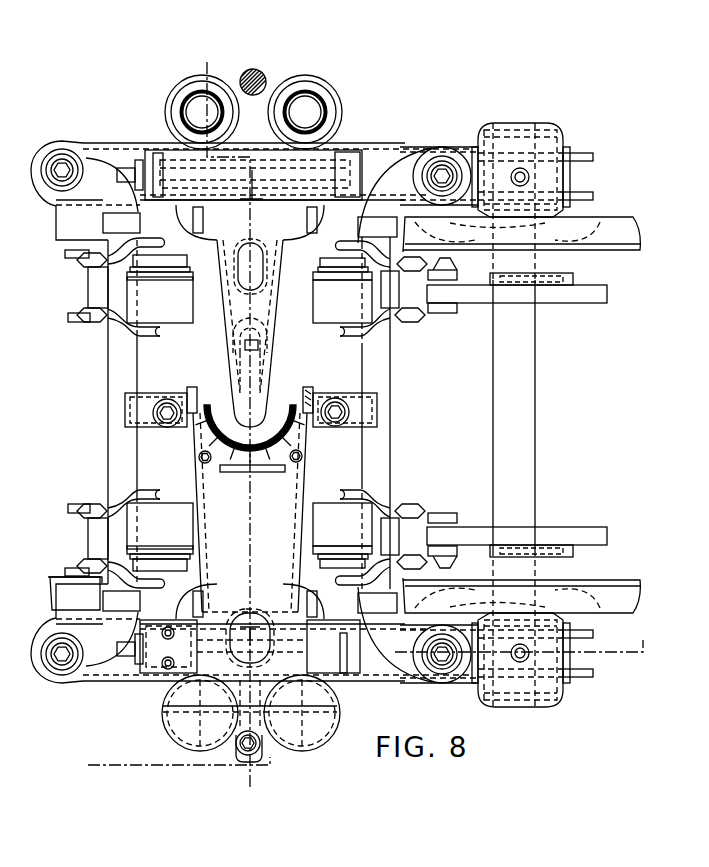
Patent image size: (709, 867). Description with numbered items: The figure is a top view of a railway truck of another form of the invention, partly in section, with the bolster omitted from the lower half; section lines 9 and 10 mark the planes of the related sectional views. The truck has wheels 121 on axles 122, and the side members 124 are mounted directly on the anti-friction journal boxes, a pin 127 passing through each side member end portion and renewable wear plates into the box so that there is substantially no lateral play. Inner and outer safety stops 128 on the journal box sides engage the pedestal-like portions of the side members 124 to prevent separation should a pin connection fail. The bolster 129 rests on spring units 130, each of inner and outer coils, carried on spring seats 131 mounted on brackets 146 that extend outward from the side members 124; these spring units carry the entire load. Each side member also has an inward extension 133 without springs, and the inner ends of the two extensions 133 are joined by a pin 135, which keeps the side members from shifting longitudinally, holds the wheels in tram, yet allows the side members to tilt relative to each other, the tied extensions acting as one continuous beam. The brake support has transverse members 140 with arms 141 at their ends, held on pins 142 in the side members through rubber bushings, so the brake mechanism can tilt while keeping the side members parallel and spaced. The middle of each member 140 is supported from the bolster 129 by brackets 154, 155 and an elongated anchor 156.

The section line 9- 9 is at (204, 70).
The section line 10- 10 is at (88, 765).
The wheels 121 is at (574, 578).
The axles 122 is at (536, 441).
The side members 124 is at (362, 143).
The pin 127 is at (521, 172).
The safety stops 128 is at (470, 613).
The bolster 129 is at (250, 512).
The spring units 130 is at (178, 99).
The spring seats 131 is at (165, 108).
The inward extensions 133 is at (225, 332).
The pin 135 is at (232, 382).
The brake support members 140 is at (115, 387).
The arms 141 is at (402, 172).
The pins 142 is at (440, 174).
The brackets 146 is at (268, 80).
The bracket 154 is at (310, 392).
The bracket 155 is at (358, 435).
The elongated anchor 156 is at (336, 410).